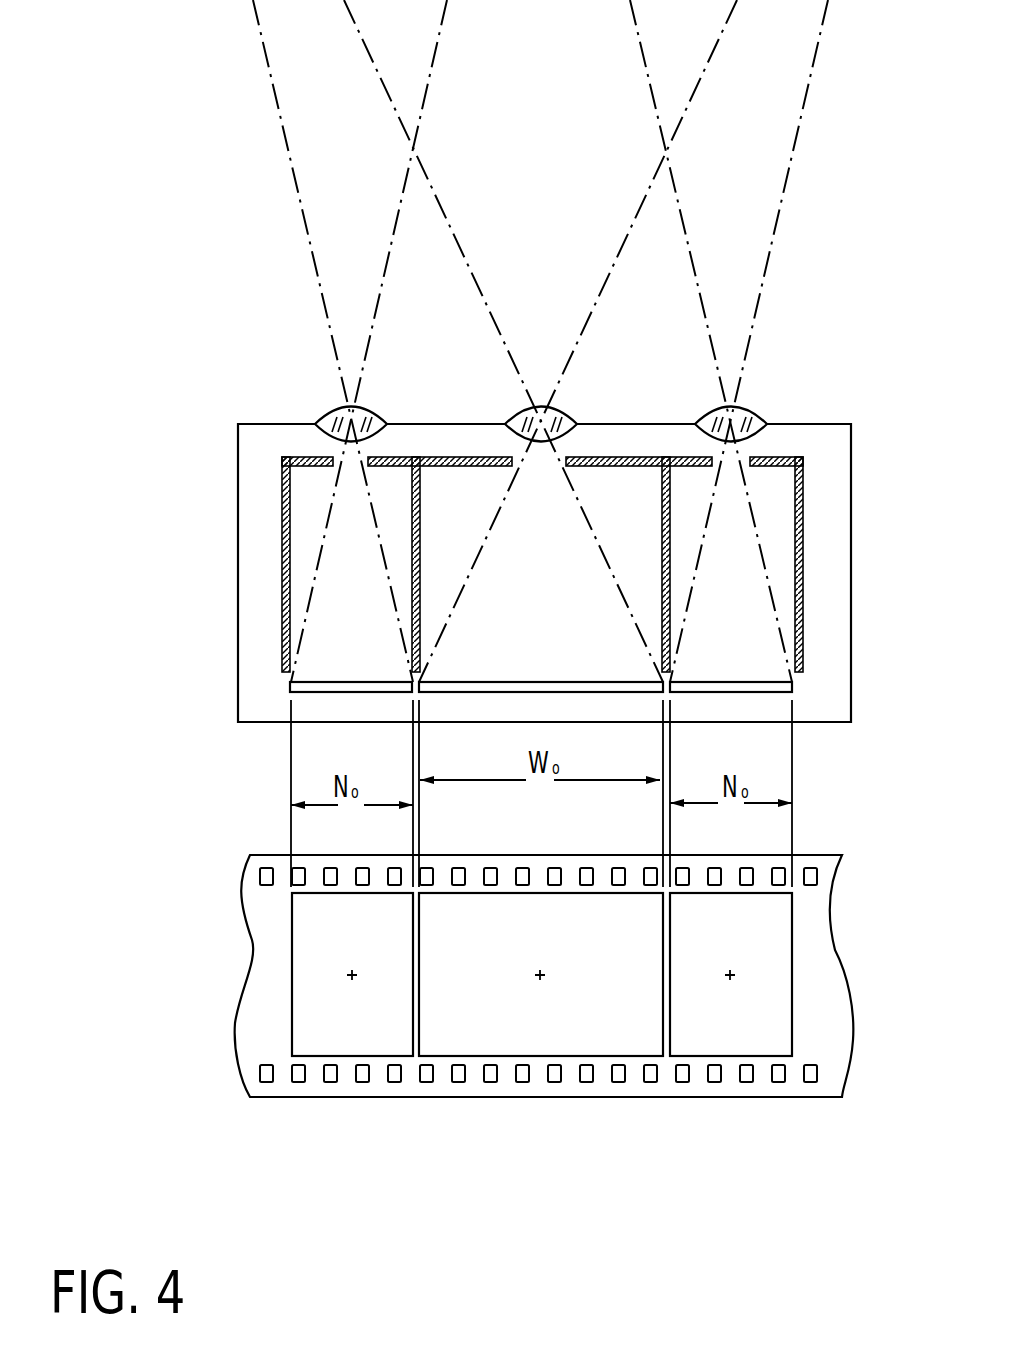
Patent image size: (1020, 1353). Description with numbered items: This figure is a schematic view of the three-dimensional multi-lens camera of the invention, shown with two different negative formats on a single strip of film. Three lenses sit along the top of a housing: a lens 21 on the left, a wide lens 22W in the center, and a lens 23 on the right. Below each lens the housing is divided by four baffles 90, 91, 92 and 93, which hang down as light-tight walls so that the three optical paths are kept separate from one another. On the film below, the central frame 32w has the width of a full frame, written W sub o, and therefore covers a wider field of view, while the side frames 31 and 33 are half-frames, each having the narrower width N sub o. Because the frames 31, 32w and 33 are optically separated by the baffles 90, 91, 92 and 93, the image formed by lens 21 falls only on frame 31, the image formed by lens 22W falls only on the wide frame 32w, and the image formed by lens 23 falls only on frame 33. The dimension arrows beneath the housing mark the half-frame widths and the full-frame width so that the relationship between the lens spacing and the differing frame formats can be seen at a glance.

The lens 21 is at (333, 410).
The lens 22W is at (572, 413).
The lens 23 is at (750, 415).
The baffle 90 is at (282, 500).
The baffle 91 is at (413, 619).
The baffle 92 is at (667, 567).
The baffle 93 is at (803, 500).
The side frame 31 is at (380, 1047).
The frame 32w is at (573, 1042).
The side frame 33 is at (765, 1037).